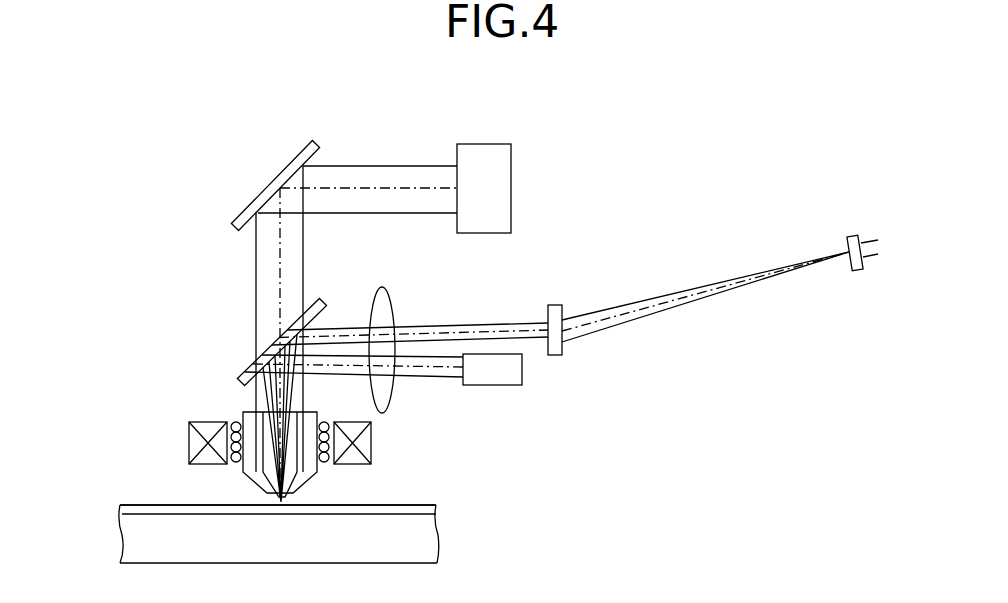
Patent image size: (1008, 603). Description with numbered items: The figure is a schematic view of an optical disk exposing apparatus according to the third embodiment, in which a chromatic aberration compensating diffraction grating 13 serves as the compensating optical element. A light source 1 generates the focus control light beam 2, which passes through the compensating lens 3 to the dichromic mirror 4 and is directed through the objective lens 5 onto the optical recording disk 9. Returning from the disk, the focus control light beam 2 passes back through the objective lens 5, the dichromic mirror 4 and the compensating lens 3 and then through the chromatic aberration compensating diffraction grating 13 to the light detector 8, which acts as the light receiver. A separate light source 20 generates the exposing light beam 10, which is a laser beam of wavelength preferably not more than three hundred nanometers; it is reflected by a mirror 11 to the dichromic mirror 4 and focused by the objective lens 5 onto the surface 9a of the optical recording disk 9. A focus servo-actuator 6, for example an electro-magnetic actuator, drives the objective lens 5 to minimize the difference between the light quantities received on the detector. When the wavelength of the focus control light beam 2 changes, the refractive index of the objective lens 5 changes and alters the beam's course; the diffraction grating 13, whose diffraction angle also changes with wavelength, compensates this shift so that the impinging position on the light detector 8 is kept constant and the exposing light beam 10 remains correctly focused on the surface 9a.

The light source 1 is at (498, 385).
The focus control light beam 2 is at (429, 375).
The compensating lens 3 is at (388, 300).
The dichromic mirror 4 is at (320, 295).
The objective lens 5 is at (310, 480).
The focus servo-actuator 6 is at (237, 420).
The light detector 8 is at (852, 237).
The optical recording disk 9 is at (428, 538).
The surface of the optical recording disk 9a is at (417, 503).
The exposing light beam 10 is at (368, 173).
The mirror 11 is at (293, 150).
The chromatic aberration compensating diffraction grating 13 is at (555, 303).
The light source 20 is at (483, 152).